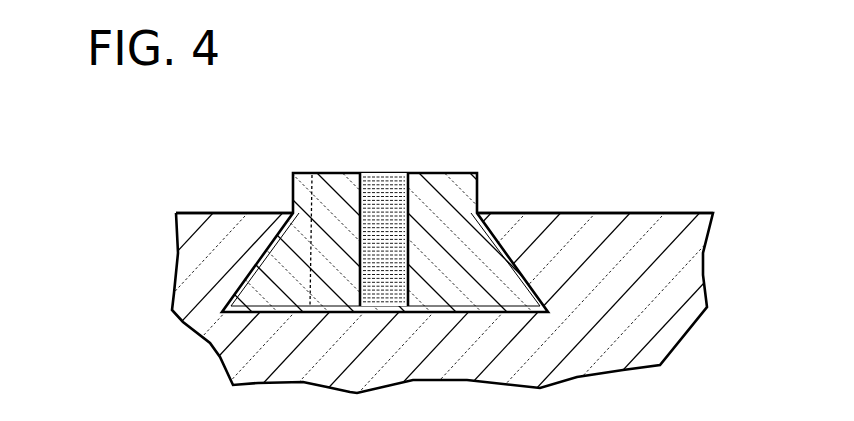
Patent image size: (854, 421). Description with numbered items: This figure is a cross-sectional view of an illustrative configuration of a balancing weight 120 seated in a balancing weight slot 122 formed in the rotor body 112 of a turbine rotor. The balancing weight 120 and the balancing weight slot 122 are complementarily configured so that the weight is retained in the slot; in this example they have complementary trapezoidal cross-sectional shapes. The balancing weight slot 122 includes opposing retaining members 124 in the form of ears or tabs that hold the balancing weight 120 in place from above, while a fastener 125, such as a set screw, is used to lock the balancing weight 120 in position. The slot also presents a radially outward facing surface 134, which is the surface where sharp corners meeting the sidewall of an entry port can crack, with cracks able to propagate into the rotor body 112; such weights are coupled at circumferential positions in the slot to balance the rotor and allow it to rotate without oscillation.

The rotor body 112 is at (572, 245).
The balancing weight 120 is at (440, 190).
The balancing weight slot 122 is at (499, 243).
The retaining members 124 is at (243, 233).
The fastener 125 is at (388, 185).
The radially outward facing surface 134 is at (312, 175).